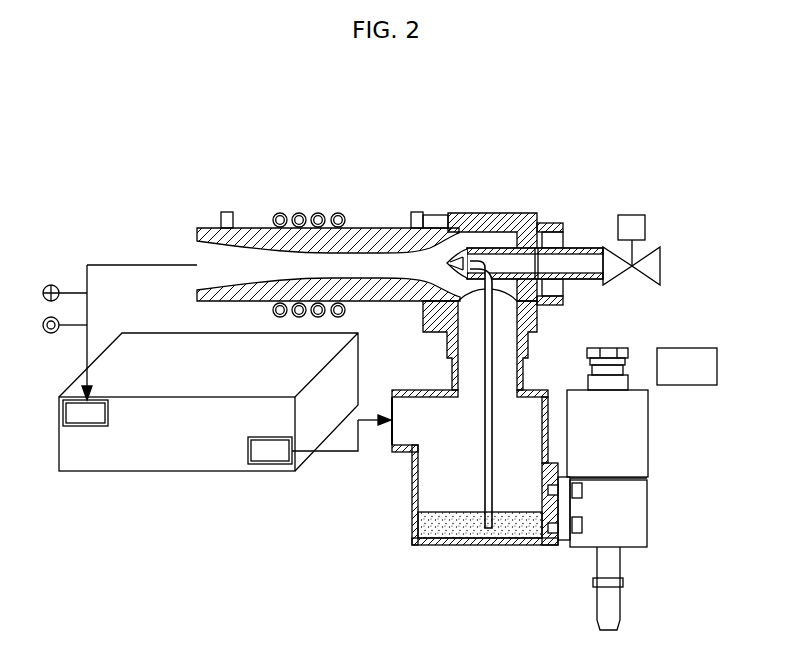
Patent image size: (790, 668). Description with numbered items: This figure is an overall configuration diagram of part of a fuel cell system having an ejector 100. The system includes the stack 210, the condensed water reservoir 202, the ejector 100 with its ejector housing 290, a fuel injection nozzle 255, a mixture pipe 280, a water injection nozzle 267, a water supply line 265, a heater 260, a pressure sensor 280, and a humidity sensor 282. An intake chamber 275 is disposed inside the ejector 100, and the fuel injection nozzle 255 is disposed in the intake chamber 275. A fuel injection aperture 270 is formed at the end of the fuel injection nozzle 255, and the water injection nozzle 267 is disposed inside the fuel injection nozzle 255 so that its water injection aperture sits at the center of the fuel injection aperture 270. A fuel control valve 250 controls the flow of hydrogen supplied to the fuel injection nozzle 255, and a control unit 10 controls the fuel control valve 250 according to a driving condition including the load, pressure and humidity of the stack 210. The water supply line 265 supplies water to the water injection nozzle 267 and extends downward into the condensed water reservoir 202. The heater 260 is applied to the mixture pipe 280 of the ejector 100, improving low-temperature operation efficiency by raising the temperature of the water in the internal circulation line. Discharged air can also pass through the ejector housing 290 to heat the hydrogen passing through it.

The control unit 10 is at (691, 347).
The ejector 100 is at (549, 182).
The condensed water reservoir 202 is at (412, 497).
The stack 210 is at (168, 466).
The fuel control valve 250 is at (650, 193).
The fuel injection nozzle 255 is at (507, 248).
The heater 260 is at (318, 213).
The water supply line 265 is at (495, 322).
The water injection nozzle 267 is at (472, 262).
The fuel injection aperture 270 is at (450, 262).
The intake chamber 275 is at (452, 297).
The mixture pipe 280 is at (253, 228).
The humidity sensor 282 is at (51, 334).
The ejector housing 290 is at (538, 225).